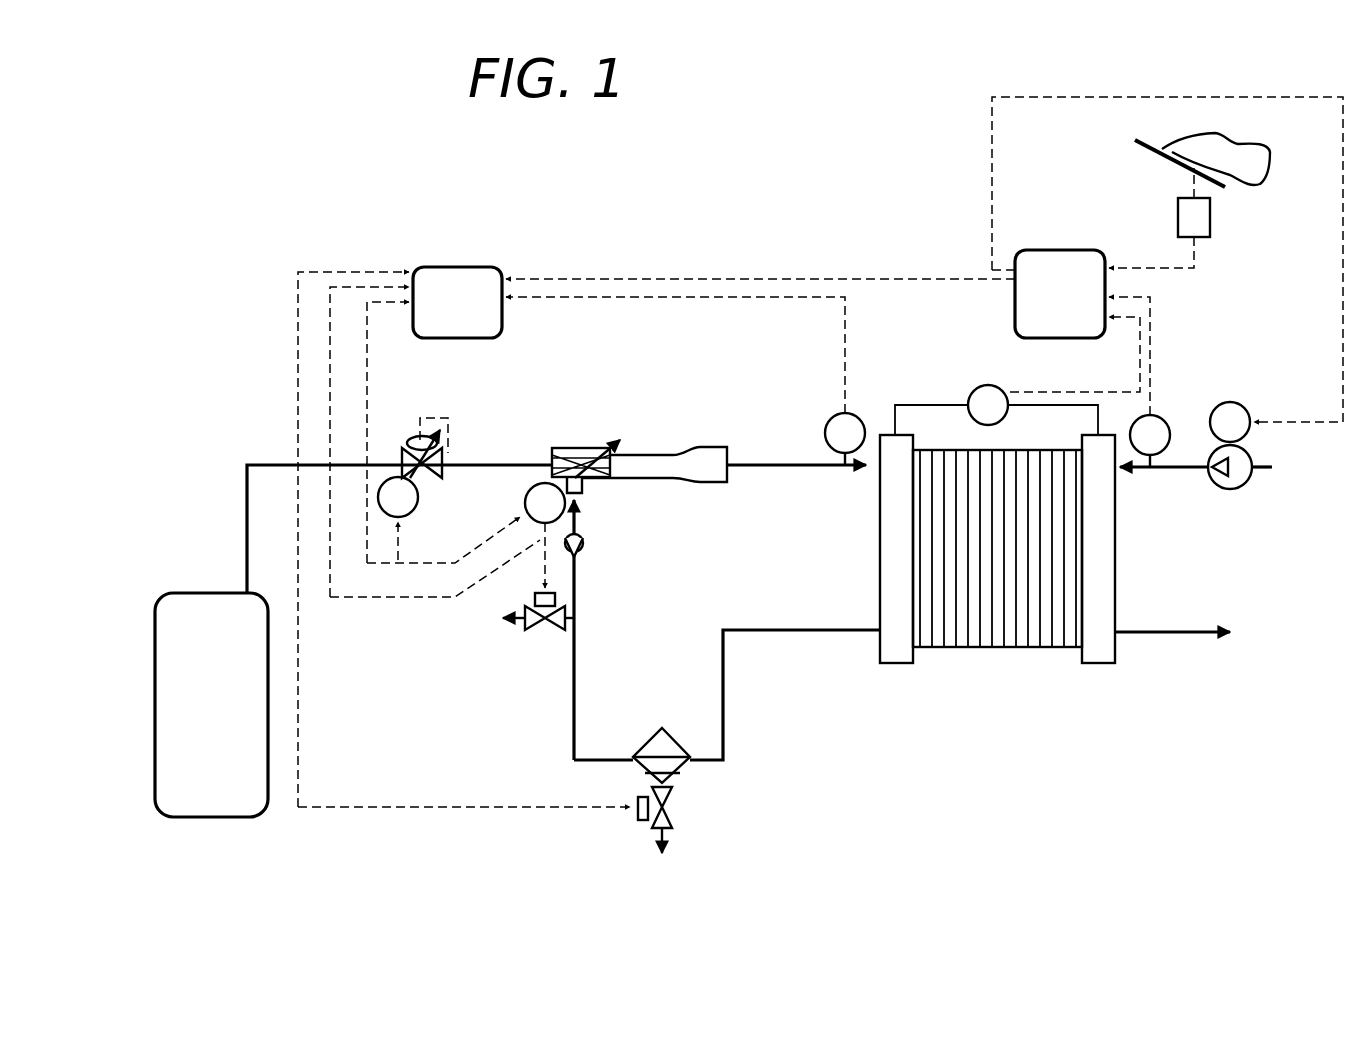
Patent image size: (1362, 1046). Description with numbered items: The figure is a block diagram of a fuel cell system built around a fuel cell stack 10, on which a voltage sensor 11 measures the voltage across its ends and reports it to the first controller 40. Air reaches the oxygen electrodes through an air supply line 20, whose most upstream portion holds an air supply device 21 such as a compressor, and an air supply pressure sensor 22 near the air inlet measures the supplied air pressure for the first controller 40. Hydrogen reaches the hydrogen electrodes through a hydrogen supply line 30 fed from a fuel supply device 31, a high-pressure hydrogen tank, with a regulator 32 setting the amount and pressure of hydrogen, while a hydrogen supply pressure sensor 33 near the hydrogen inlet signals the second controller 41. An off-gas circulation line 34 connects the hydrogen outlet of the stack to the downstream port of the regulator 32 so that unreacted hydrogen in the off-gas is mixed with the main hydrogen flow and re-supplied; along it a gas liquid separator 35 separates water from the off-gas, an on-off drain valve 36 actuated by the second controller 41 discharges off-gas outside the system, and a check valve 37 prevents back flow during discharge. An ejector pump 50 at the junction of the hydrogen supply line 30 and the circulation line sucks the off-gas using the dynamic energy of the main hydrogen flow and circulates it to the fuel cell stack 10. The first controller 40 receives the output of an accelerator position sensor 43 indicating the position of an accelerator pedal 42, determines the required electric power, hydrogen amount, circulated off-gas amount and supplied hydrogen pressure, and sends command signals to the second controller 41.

The fuel cell stack 10 is at (995, 647).
The voltage sensor 11 is at (983, 385).
The air supply line 20 is at (1167, 470).
The air supply device 21 is at (1232, 490).
The air supply pressure sensor 22 is at (1166, 415).
The hydrogen supply line 30 is at (247, 510).
The fuel supply device 31 is at (200, 817).
The regulator 32 is at (407, 435).
The hydrogen supply pressure sensor 33 is at (854, 413).
The off-gas circulation line 34 is at (818, 632).
The gas liquid separator 35 is at (667, 728).
The on-off drain valve 36 is at (540, 630).
The check valve 37 is at (584, 544).
The first controller 40 is at (1058, 250).
The second controller 41 is at (455, 267).
The accelerator pedal 42 is at (1172, 153).
The accelerator position sensor 43 is at (1178, 212).
The ejector pump 50 is at (572, 448).